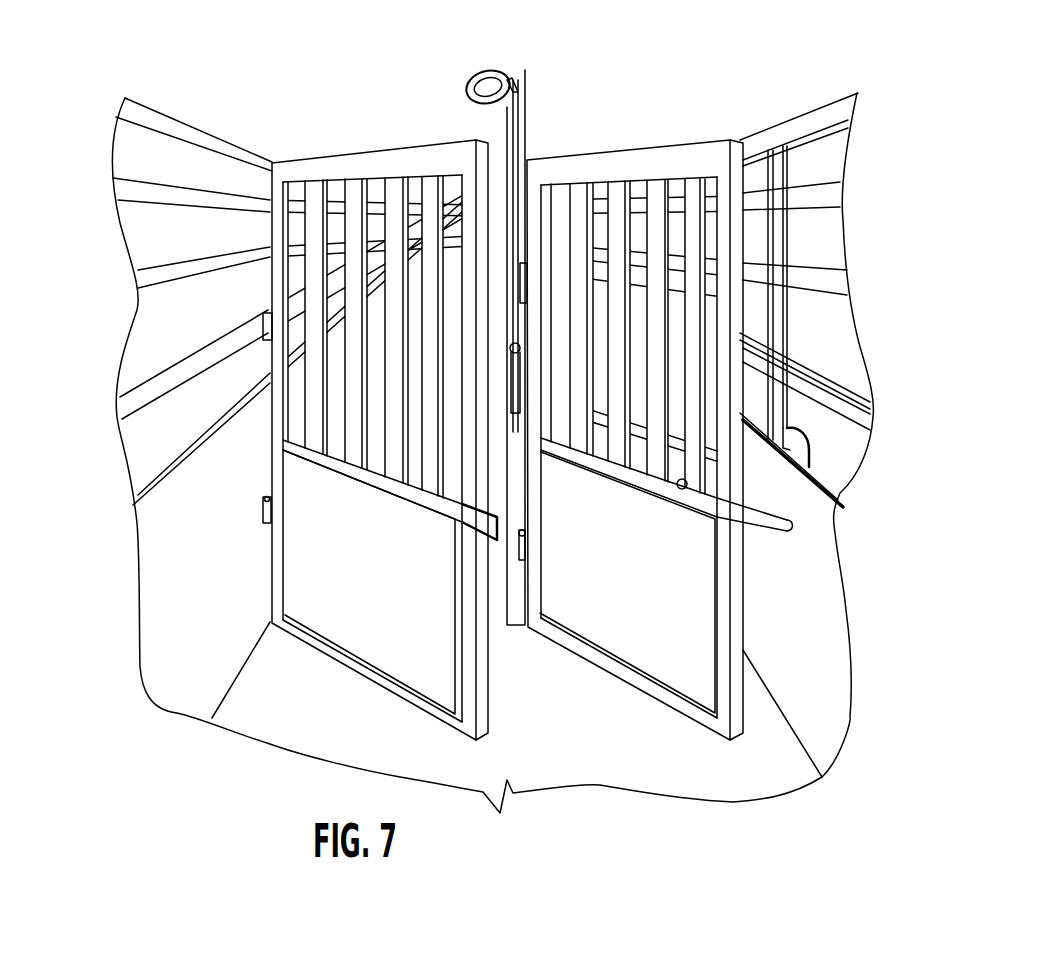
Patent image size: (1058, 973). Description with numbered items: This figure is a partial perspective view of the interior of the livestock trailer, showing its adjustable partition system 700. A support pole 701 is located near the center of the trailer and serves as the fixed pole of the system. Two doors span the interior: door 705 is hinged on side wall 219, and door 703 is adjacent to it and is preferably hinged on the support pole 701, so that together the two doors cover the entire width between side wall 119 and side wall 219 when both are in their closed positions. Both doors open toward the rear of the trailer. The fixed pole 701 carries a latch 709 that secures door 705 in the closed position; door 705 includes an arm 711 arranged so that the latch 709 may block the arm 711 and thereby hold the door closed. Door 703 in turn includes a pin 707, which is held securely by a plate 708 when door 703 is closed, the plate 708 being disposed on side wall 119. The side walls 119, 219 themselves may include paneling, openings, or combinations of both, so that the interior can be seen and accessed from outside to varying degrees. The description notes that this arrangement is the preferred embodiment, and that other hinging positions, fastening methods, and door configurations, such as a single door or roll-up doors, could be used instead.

The adjustable partition system 700 is at (729, 85).
The support pole 701 is at (520, 132).
The door 703 is at (682, 613).
The door 705 is at (397, 615).
The pin 707 is at (768, 523).
The plate 708 is at (796, 445).
The latch 709 is at (513, 378).
The arm 711 is at (523, 525).
The side wall 119 is at (833, 493).
The side wall 219 is at (167, 467).